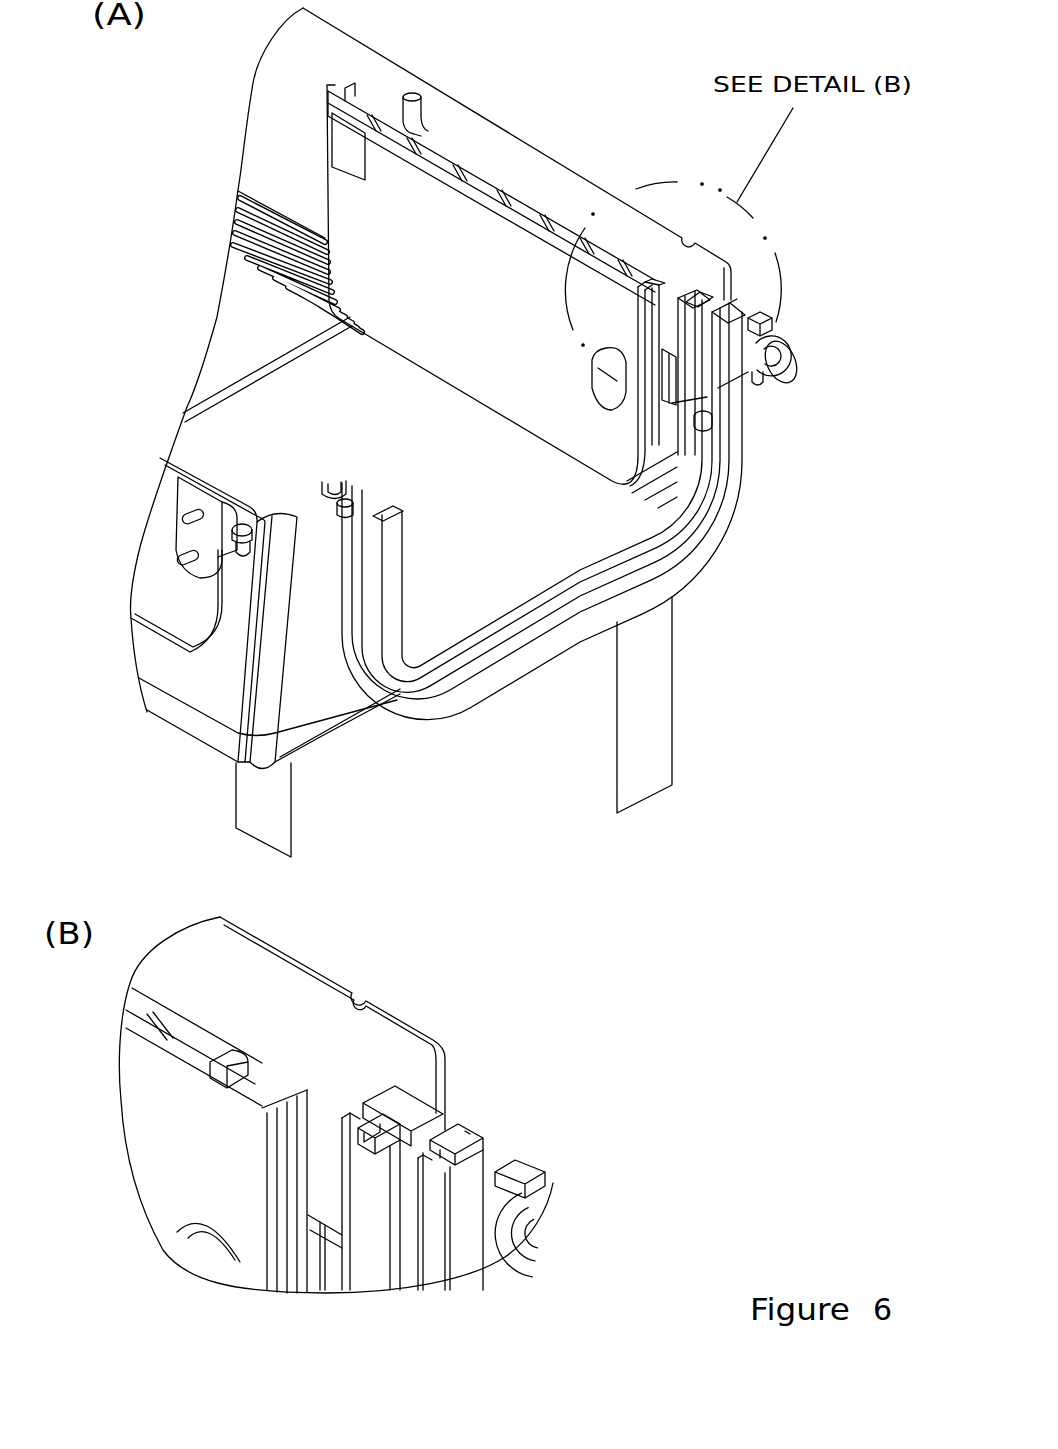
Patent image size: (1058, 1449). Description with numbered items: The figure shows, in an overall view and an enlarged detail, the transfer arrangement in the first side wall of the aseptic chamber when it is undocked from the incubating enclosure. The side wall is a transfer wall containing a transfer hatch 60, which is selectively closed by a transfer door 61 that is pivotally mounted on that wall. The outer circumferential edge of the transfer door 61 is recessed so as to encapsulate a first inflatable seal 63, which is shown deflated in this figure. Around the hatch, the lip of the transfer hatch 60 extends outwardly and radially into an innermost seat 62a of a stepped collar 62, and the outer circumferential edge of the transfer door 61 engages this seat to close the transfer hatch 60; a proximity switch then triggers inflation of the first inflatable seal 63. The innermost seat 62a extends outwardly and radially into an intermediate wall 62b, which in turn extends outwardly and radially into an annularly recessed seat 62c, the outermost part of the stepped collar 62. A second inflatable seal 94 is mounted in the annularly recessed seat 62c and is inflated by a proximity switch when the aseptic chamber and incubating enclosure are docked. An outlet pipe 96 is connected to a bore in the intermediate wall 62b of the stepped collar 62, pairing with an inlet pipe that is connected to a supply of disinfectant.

The transfer hatch 60 is at (560, 513).
The transfer door 61 is at (476, 287).
The stepped collar 62 is at (530, 673).
The innermost seat 62a is at (375, 1250).
The intermediate wall 62b is at (427, 1143).
The annularly recessed seat 62c is at (432, 1257).
The first inflatable seal 63 is at (287, 1082).
The second inflatable seal 94 is at (447, 1165).
The outlet pipe 96 is at (797, 342).